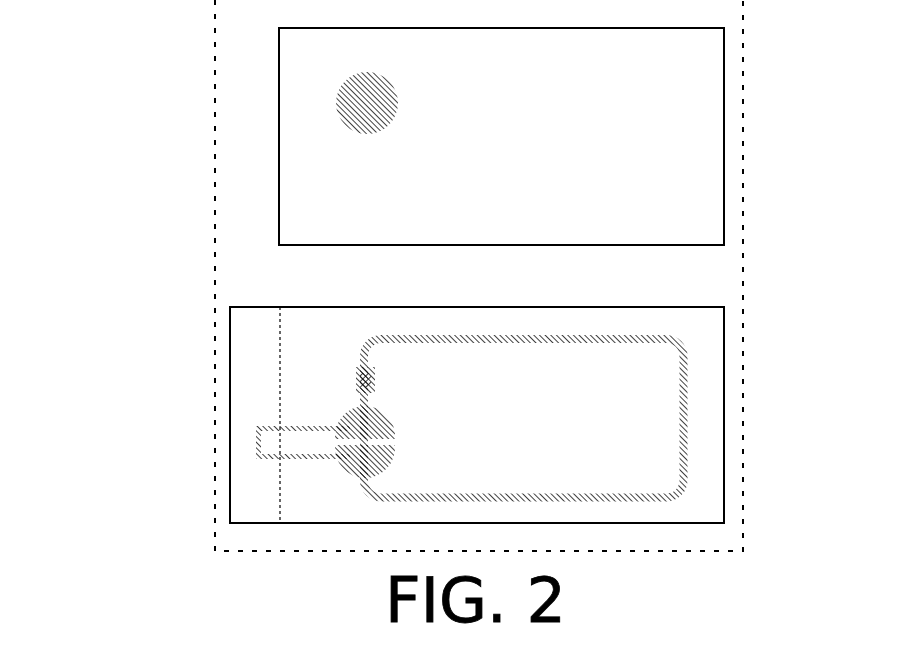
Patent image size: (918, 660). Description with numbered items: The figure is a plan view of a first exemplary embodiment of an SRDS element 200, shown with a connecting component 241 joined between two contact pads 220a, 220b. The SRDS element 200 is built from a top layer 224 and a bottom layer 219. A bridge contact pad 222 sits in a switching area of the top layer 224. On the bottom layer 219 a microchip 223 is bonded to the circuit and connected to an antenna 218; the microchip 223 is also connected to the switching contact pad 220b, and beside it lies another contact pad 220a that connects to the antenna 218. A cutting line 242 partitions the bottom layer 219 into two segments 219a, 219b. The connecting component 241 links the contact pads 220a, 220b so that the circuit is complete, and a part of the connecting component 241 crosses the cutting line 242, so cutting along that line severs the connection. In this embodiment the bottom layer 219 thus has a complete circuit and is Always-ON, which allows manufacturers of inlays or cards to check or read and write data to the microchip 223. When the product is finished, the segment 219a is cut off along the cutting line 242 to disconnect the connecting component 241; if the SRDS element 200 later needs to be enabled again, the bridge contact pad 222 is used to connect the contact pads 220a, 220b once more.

The SRDS element 200 is at (185, 72).
The top layer 224 is at (702, 93).
The bridge contact pad 222 is at (395, 90).
The bottom layer 219 is at (707, 372).
The segment 219a is at (240, 335).
The segment 219b is at (312, 330).
The cutting line 242 is at (280, 395).
The connecting component 241 is at (257, 442).
The antenna 218 is at (575, 493).
The microchip 223 is at (373, 382).
The switching contact pad 220b is at (390, 428).
The contact pad 220a is at (392, 460).